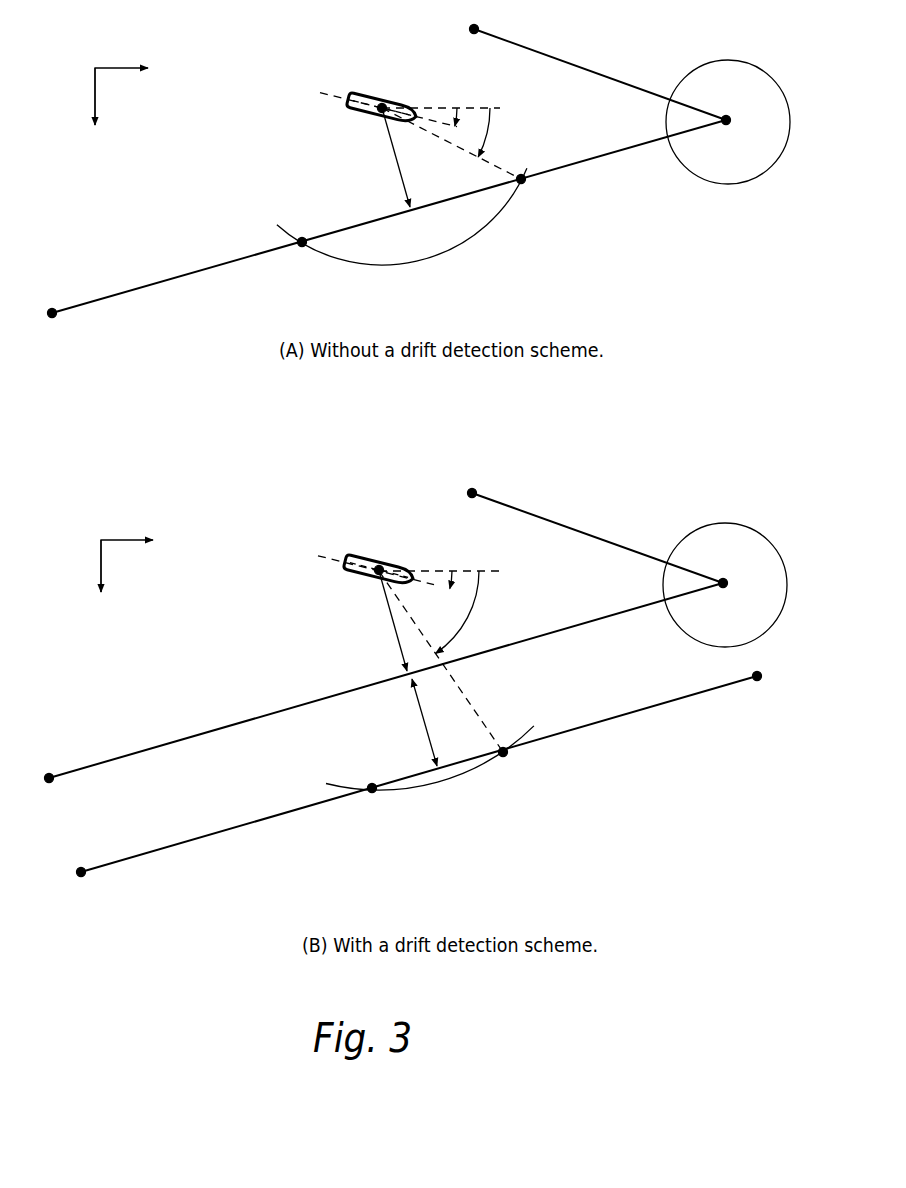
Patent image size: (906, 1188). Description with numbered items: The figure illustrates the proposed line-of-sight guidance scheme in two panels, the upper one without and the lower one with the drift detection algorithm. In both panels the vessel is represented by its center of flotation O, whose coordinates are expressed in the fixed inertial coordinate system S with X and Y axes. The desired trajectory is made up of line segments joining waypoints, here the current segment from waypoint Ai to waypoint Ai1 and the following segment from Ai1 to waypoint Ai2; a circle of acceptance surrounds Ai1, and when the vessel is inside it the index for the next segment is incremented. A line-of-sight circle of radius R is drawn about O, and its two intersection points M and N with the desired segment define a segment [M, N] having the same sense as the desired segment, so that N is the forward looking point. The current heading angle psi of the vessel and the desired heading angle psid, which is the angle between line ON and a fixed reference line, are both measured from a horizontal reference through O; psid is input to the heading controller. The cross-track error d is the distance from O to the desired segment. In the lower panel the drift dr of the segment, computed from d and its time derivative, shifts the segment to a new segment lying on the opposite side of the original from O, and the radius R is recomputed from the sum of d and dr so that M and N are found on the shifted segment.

The reference coordinate frame (X, Y axes) S is at (129, 339).
The waypoint A_i Ai is at (400, 512).
The waypoint A_i+1 Ai1 is at (728, 385).
The waypoint A_i+2 Ai2 is at (580, 301).
The center of flotation of the vessel O is at (382, 108).
The current heading angle psi is at (445, 350).
The desired heading angle psid is at (450, 430).
The intersection point M is at (341, 527).
The intersection point N is at (521, 480).
The radius of the LOS circle R is at (382, 108).
The cross-track error d is at (394, 389).
The drift of the line segment dr is at (424, 722).